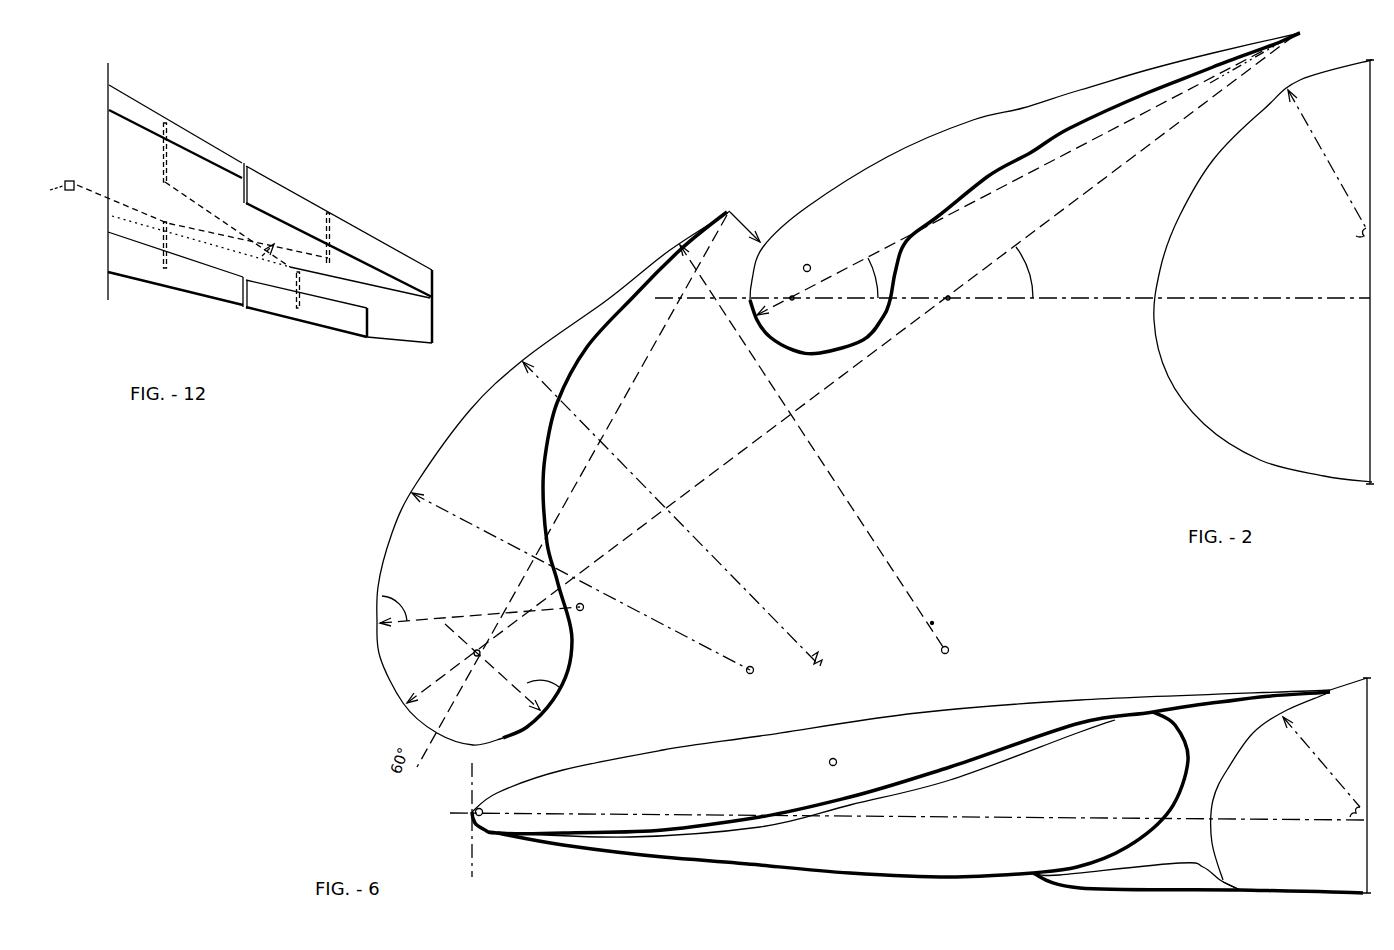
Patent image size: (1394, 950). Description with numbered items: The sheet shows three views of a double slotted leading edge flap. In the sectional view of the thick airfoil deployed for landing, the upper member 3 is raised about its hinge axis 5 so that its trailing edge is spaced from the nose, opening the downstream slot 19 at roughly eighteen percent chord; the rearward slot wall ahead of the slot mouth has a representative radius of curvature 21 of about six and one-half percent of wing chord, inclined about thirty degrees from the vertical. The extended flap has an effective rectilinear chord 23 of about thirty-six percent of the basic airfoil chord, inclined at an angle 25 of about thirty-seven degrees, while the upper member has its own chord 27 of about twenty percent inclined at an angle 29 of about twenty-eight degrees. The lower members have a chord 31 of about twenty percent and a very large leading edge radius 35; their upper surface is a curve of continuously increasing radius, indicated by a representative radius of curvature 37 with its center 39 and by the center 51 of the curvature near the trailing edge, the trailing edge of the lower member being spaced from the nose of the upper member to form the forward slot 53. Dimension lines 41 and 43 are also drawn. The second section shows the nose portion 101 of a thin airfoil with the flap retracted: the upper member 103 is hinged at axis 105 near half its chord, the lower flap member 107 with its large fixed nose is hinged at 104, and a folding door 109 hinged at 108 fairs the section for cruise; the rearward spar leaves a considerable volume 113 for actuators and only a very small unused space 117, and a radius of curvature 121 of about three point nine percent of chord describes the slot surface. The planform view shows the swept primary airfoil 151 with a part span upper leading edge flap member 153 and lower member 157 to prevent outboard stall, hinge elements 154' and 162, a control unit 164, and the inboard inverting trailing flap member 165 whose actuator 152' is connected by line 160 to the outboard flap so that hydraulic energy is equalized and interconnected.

In FIG. 2, the upper member 3 is at (1025, 106).
In FIG. 2, the hinge axis 5 is at (807, 263).
In FIG. 2, the downstream slot 19 is at (1308, 68).
In FIG. 2, the radius of curvature 21 is at (1324, 133).
In FIG. 2, the rectilinear chord 23 is at (828, 378).
In FIG. 2, the inclination angle 25 is at (1030, 255).
In FIG. 2, the chord of upper member 27 is at (1042, 163).
In FIG. 2, the inclination angle of upper member 29 is at (885, 288).
In FIG. 2, the chord of lower members 31 is at (622, 400).
In FIG. 2, the leading edge radius 35 is at (568, 683).
In FIG. 2, the radius of curvature 37 is at (378, 598).
In FIG. 2, the center of curvature 39 is at (582, 612).
In FIG. 2, the reference line 41 is at (563, 573).
In FIG. 2, the reference line 43 is at (748, 672).
In FIG. 2, the center of curvature 51 is at (950, 652).
In FIG. 2, the forward slot 53 is at (741, 216).
In FIG. 6, the nose portion 101 is at (1293, 893).
In FIG. 6, the upper member 103 is at (742, 735).
In FIG. 6, the hinge 104 is at (470, 820).
In FIG. 6, the hinge axis 105 is at (836, 756).
In FIG. 6, the lower flap member 107 is at (833, 877).
In FIG. 6, the hinge 108 is at (1243, 898).
In FIG. 6, the folding door 109 is at (1100, 886).
In FIG. 6, the volume 113 is at (1300, 712).
In FIG. 6, the unused space 117 is at (1216, 715).
In FIG. 6, the radius of curvature 121 is at (1320, 760).
In FIG. 12, the primary airfoil 151 is at (432, 310).
In FIG. 12, the actuator 152' is at (154, 279).
In FIG. 12, the upper leading edge flap member 153 is at (395, 272).
In FIG. 12, the hinge 154' is at (353, 221).
In FIG. 12, the lower leading edge flap member 157 is at (363, 231).
In FIG. 12, the connecting line 160 is at (272, 236).
In FIG. 12, the control line 162 is at (107, 207).
In FIG. 12, the control box 164 is at (70, 177).
In FIG. 12, the inverting trailing flap member 165 is at (183, 292).